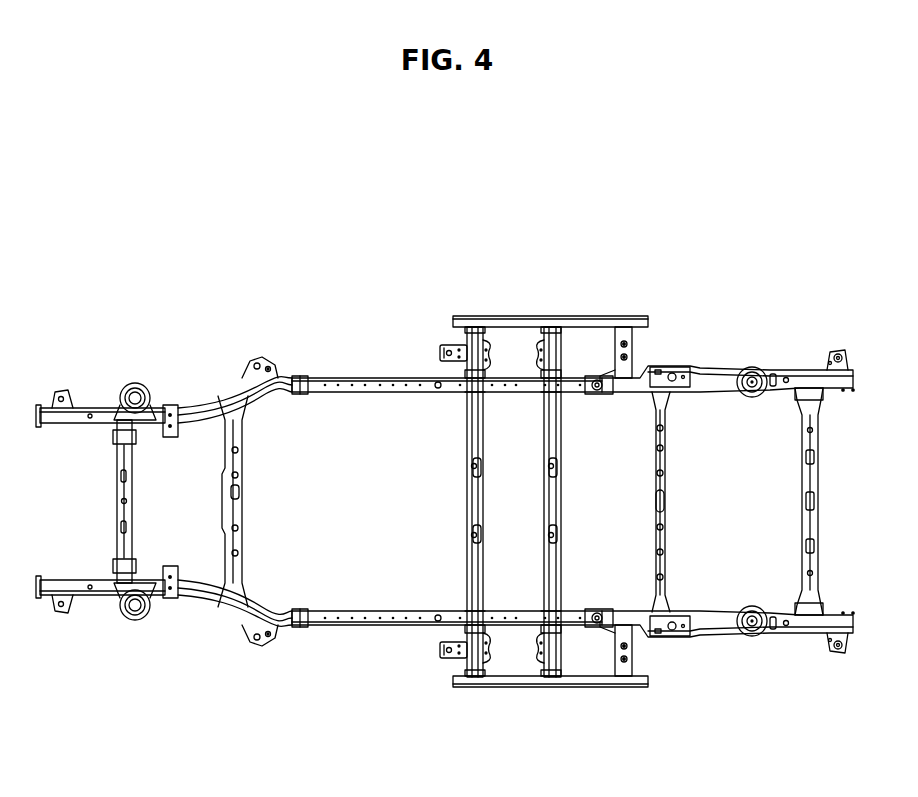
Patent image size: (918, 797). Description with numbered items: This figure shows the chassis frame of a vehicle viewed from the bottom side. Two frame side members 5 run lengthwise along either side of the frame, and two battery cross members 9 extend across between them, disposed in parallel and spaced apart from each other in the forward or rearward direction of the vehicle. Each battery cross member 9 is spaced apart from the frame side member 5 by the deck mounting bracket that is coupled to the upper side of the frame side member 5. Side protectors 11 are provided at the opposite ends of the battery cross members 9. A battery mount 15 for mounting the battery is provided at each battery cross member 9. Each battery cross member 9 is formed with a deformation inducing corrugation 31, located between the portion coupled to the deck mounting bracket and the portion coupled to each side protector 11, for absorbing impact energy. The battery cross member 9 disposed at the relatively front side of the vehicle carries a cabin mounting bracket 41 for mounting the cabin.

The frame side member 5 is at (355, 376).
The battery cross member 9 is at (550, 558).
The side protector 11 is at (587, 317).
The battery mount 15 is at (470, 533).
The deformation inducing corrugation 31 is at (539, 352).
The cabin mounting bracket 41 is at (447, 345).